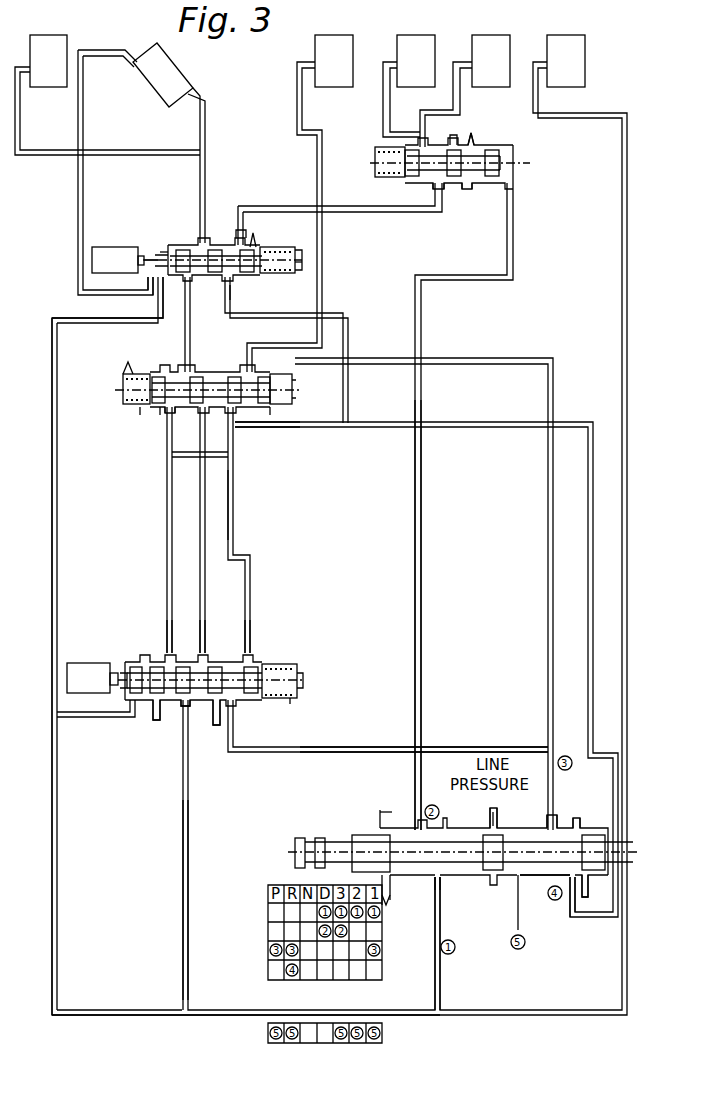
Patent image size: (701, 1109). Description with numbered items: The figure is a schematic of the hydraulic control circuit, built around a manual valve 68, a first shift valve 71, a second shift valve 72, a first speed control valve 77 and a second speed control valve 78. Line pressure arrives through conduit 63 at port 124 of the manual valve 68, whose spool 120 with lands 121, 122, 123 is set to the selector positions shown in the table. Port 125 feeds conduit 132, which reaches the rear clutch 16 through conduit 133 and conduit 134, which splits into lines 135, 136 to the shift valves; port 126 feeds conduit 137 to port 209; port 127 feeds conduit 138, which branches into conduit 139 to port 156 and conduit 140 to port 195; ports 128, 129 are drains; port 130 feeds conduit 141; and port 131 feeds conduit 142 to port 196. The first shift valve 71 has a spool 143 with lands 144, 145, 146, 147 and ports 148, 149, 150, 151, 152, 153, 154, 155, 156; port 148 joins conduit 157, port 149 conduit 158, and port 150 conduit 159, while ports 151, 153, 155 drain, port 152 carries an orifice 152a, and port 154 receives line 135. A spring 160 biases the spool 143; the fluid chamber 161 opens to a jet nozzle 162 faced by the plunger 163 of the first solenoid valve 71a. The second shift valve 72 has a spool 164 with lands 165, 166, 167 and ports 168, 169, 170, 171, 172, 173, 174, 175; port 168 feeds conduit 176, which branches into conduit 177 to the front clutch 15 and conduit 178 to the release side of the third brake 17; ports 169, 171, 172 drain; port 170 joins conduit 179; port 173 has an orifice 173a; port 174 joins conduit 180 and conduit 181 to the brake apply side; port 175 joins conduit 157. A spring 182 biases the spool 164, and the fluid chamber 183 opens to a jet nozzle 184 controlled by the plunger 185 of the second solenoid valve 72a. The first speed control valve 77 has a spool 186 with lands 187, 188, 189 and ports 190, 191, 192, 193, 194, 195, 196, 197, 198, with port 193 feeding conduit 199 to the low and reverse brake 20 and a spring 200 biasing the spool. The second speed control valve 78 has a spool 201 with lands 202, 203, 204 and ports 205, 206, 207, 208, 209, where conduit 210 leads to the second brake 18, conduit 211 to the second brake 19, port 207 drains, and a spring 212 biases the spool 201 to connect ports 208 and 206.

The front clutch 15 is at (60, 67).
The rear clutch 16 is at (578, 67).
The third brake 17 is at (168, 80).
The second brake 18 is at (503, 67).
The second brake 19 is at (428, 67).
The low and reverse brake 20 is at (346, 67).
The conduit 63 is at (477, 815).
The manual valve 68 is at (438, 810).
The first shift valve 71 is at (270, 660).
The first solenoid valve 71a is at (104, 690).
The second shift valve 72 is at (188, 225).
The second solenoid valve 72a is at (132, 271).
The first speed control valve 77 is at (157, 370).
The second speed control valve 78 is at (523, 158).
The valve spool 120 is at (455, 878).
The land 121 is at (362, 835).
The land 122 is at (497, 878).
The land 123 is at (613, 930).
The port 124 is at (498, 830).
The port 125 is at (440, 890).
The port 126 is at (385, 826).
The port 127 is at (572, 745).
The drain port 128 is at (590, 877).
The drain port 129 is at (390, 900).
The port 130 is at (525, 880).
The port 131 is at (572, 900).
The conduit 132 is at (437, 990).
The conduit 133 is at (623, 300).
The conduit 134 is at (207, 1017).
The line 135 is at (189, 835).
The line 136 is at (57, 540).
The conduit 137 is at (422, 555).
The conduit 138 is at (555, 745).
The conduit 139 is at (468, 747).
The conduit 140 is at (475, 358).
The conduit 141 is at (518, 926).
The conduit 142 is at (455, 422).
The valve spool 143 is at (300, 680).
The land 144 is at (155, 664).
The land 145 is at (168, 620).
The land 146 is at (222, 665).
The land 147 is at (285, 655).
The port 148 is at (178, 655).
The port 149 is at (204, 652).
The port 150 is at (255, 652).
The drain port 151 is at (297, 656).
The port 152 is at (130, 715).
The orifice 152a is at (157, 718).
The drain port 153 is at (188, 712).
The port 154 is at (185, 722).
The drain port 155 is at (217, 727).
The port 156 is at (238, 712).
The conduit 157 is at (350, 335).
The conduit 158 is at (205, 540).
The conduit 159 is at (235, 515).
The spring 160 is at (298, 697).
The fluid chamber 161 is at (132, 667).
The jet nozzle 162 is at (122, 668).
The plunger 163 is at (112, 672).
The valve spool 164 is at (228, 247).
The land 165 is at (186, 248).
The land 166 is at (224, 282).
The land 167 is at (268, 278).
The port 168 is at (206, 245).
The drain port 169 is at (212, 243).
The port 170 is at (246, 216).
The drain port 171 is at (266, 247).
The drain port 172 is at (302, 252).
The port 173 is at (140, 277).
The orifice 173a is at (150, 283).
The port 174 is at (160, 290).
The port 175 is at (232, 282).
The conduit 176 is at (205, 152).
The conduit 177 is at (126, 150).
The conduit 178 is at (203, 110).
The conduit 179 is at (370, 214).
The conduit 180 is at (245, 372).
The conduit 181 is at (78, 187).
The spring 182 is at (323, 290).
The fluid chamber 183 is at (160, 250).
The jet nozzle 184 is at (155, 256).
The plunger 185 is at (150, 260).
The valve spool 186 is at (125, 370).
The land 187 is at (160, 412).
The land 188 is at (196, 372).
The land 189 is at (282, 400).
The drain port 190 is at (123, 376).
The port 191 is at (175, 372).
The drain port 192 is at (233, 420).
The port 193 is at (300, 428).
The drain port 194 is at (350, 360).
The port 195 is at (292, 380).
The port 196 is at (178, 410).
The port 197 is at (170, 440).
The port 198 is at (270, 410).
The conduit 199 is at (317, 152).
The spring 200 is at (135, 408).
The valve spool 201 is at (505, 152).
The land 202 is at (436, 192).
The land 203 is at (458, 184).
The land 204 is at (502, 186).
The port 205 is at (383, 138).
The port 206 is at (453, 138).
The drain port 207 is at (474, 146).
The port 208 is at (466, 192).
The port 209 is at (515, 200).
The conduit 210 is at (433, 110).
The conduit 211 is at (383, 95).
The spring 212 is at (378, 160).